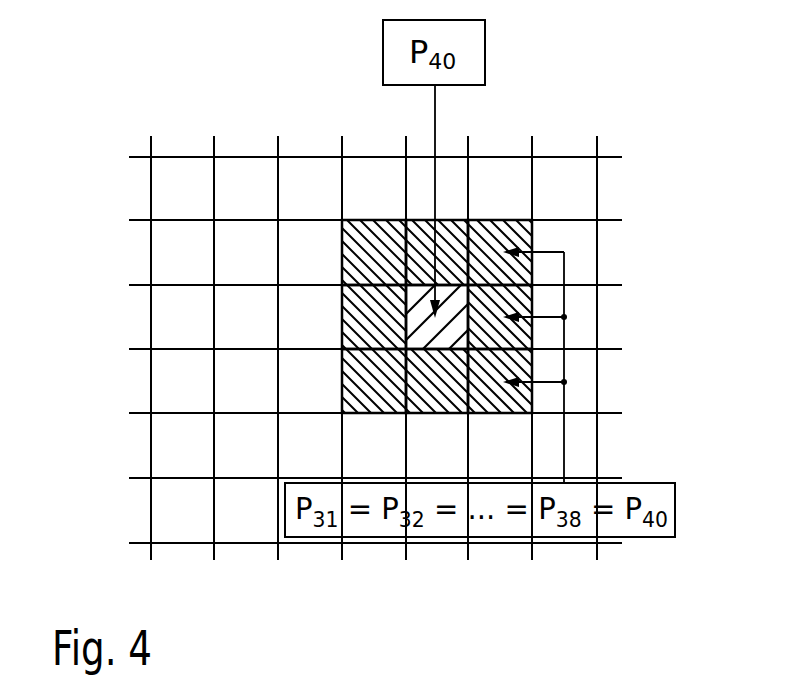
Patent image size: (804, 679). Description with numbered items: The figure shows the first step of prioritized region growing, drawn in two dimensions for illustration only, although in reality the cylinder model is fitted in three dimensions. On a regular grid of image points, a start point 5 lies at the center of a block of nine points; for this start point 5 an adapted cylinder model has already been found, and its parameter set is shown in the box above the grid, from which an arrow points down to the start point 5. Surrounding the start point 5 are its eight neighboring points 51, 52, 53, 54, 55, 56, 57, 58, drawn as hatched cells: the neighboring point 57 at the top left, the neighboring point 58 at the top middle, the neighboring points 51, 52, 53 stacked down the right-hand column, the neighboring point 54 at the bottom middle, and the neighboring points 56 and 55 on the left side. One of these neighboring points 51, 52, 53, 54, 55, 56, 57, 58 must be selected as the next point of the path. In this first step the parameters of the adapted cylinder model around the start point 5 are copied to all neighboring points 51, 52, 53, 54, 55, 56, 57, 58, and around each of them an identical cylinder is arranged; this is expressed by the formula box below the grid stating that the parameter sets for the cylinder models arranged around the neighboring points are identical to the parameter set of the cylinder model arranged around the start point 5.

The start point 5 is at (420, 307).
The neighboring point 51 is at (518, 240).
The neighboring point 52 is at (525, 300).
The neighboring point 53 is at (525, 365).
The neighboring point 54 is at (437, 395).
The neighboring point 55 is at (355, 382).
The neighboring point 56 is at (340, 318).
The neighboring point 57 is at (353, 257).
The neighboring point 58 is at (447, 233).